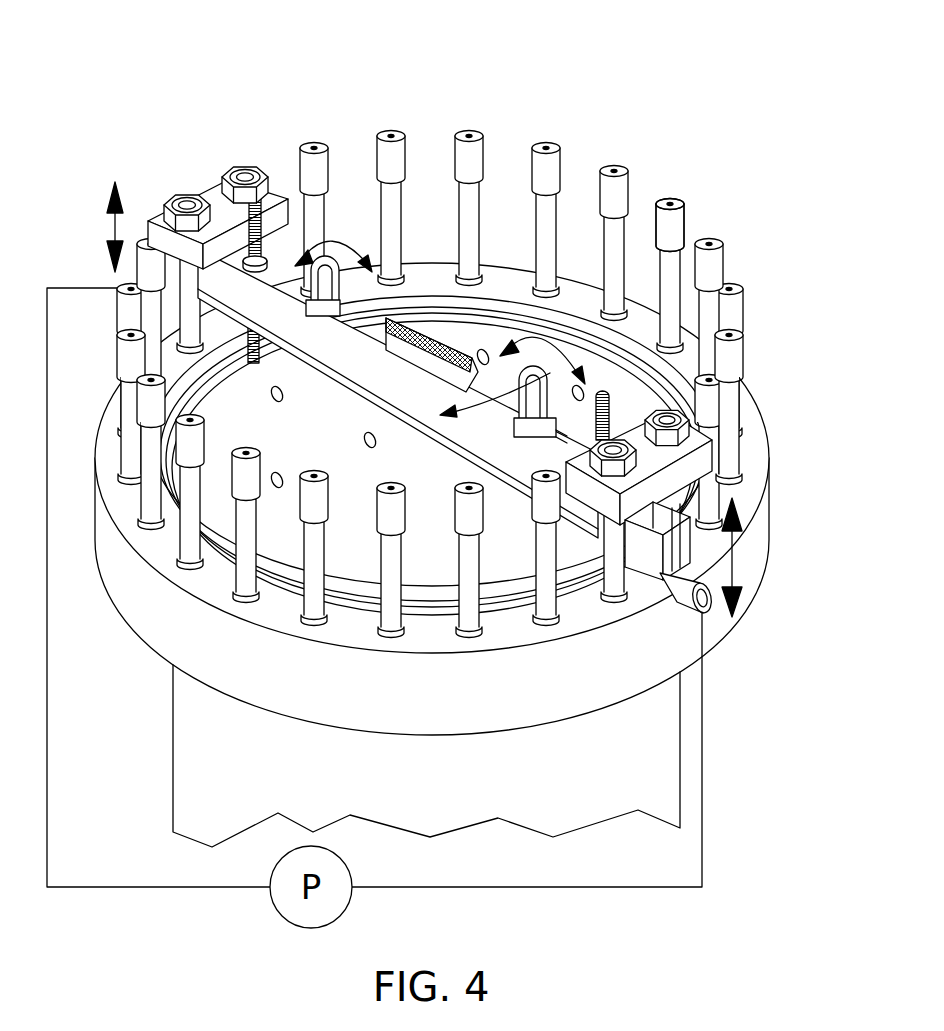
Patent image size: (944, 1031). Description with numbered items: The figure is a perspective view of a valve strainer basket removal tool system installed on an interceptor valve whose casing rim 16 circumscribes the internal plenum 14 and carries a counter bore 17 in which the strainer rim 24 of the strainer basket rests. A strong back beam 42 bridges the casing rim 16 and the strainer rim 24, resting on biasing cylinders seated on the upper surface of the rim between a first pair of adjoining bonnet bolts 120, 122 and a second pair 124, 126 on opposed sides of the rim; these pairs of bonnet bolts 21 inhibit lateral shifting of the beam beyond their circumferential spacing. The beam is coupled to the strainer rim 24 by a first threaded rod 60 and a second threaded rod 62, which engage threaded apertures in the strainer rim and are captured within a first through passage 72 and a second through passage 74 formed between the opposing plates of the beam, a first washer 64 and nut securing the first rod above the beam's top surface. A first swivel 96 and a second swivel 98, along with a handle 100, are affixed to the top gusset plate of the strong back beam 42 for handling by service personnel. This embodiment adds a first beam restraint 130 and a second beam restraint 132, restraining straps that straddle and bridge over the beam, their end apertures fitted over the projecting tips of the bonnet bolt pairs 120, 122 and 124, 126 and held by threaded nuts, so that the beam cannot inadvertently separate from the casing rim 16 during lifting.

The internal plenum 14 is at (753, 553).
The casing rim 16 is at (737, 503).
The counter bore 17 is at (330, 612).
The bonnet bolts 21 is at (485, 195).
The strainer rim 24 is at (681, 327).
The strong back beam 42 is at (538, 362).
The first threaded rod 60 is at (258, 345).
The second threaded rod 62 is at (700, 292).
The first washer 64 is at (205, 280).
The first through passage 72 is at (338, 262).
The second through passage 74 is at (666, 207).
The first swivel 96 is at (363, 267).
The second swivel 98 is at (602, 392).
The handle 100 is at (420, 330).
The first pair bonnet bolt 120 is at (168, 293).
The first pair bonnet bolt 122 is at (242, 166).
The second pair bonnet bolt 124 is at (665, 606).
The second pair bonnet bolt 126 is at (690, 408).
The first beam restraint 130 is at (148, 220).
The second beam restraint 132 is at (690, 468).